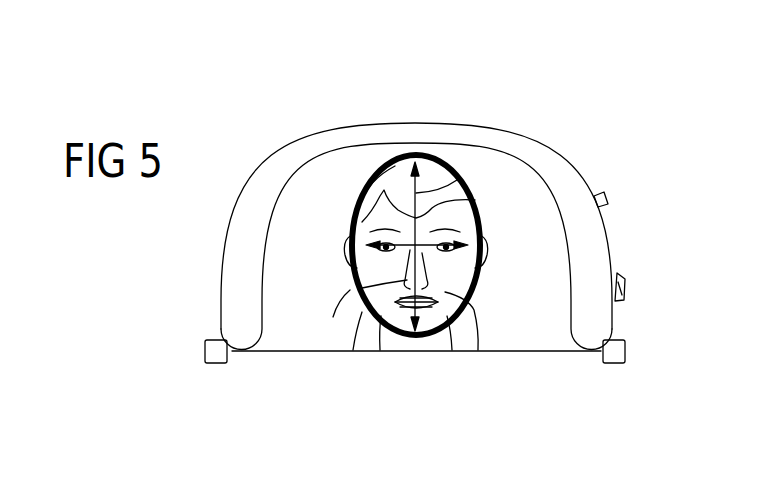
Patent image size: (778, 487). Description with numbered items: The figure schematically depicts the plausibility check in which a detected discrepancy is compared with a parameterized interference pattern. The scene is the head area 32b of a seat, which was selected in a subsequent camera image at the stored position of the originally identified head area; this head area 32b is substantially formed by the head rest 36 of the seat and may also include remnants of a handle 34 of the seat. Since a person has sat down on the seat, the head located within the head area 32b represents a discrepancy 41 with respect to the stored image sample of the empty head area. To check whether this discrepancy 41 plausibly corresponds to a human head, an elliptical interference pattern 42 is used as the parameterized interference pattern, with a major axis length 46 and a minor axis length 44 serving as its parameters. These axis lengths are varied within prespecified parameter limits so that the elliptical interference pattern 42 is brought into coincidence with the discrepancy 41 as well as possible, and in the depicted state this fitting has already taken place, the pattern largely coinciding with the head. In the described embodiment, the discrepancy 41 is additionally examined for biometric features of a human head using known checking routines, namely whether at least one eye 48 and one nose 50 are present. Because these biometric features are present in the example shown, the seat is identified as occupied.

The head area 32b is at (548, 129).
The handle 34 is at (623, 290).
The head rest 36 is at (273, 170).
The discrepancy 41 is at (478, 350).
The elliptical interference pattern 42 is at (353, 350).
The minor axis length 44 is at (478, 201).
The major axis length 46 is at (440, 167).
The eye 48 is at (350, 270).
The nose 50 is at (333, 317).